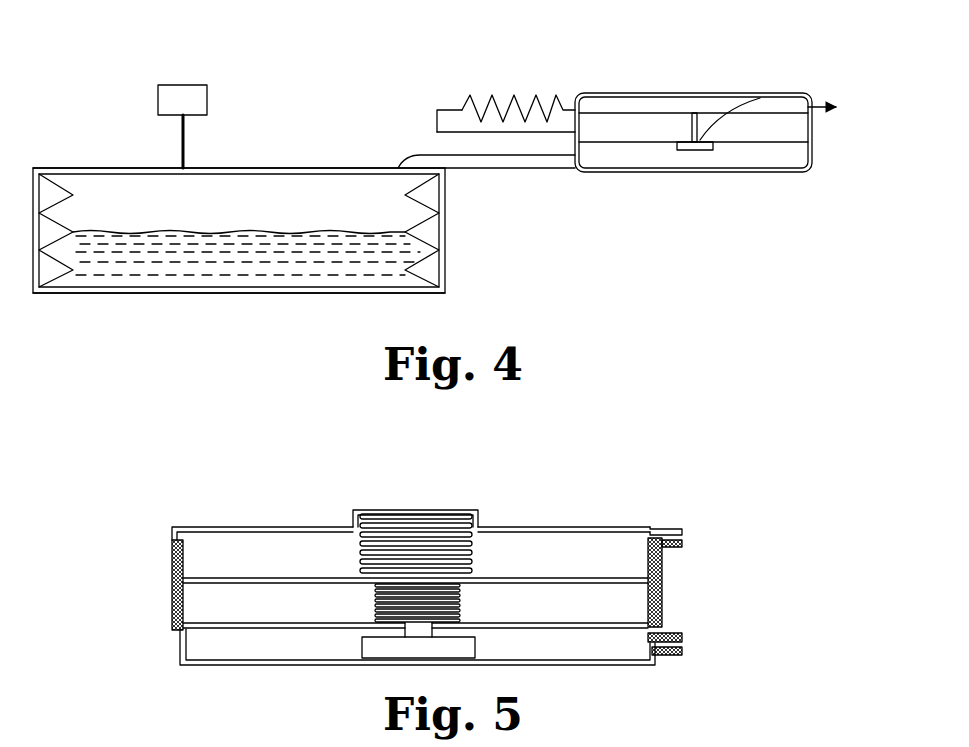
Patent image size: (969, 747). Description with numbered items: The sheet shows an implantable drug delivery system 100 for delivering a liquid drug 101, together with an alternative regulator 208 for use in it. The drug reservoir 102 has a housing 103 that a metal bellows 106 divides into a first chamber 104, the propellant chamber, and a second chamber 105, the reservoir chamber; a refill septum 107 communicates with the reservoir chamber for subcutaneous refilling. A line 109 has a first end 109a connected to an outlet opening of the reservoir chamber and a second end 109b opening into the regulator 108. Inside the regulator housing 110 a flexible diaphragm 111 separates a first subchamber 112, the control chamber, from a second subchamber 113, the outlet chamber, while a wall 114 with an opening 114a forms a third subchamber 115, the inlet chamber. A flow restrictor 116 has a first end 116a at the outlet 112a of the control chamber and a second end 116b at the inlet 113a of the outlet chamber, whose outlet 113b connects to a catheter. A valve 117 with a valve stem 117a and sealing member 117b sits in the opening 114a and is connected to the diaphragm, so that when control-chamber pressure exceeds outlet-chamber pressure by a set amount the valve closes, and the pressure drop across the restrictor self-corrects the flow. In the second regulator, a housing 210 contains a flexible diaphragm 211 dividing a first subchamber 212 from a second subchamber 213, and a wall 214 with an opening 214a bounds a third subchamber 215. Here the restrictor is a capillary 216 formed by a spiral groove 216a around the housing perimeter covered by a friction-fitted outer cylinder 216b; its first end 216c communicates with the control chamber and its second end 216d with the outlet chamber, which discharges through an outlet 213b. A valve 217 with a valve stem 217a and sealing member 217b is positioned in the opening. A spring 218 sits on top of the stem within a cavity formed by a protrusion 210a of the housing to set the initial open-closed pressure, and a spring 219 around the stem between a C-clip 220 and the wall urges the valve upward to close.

In FIG. 4, the drug delivery system 100 is at (372, 93).
In FIG. 4, the liquid drug 101 is at (230, 268).
In FIG. 4, the drug reservoir 102 is at (447, 247).
In FIG. 4, the housing 103 is at (203, 300).
In FIG. 4, the first chamber 104 is at (45, 172).
In FIG. 4, the second chamber 105 is at (222, 216).
In FIG. 4, the metal bellows 106 is at (83, 168).
In FIG. 4, the refill septum 107 is at (183, 85).
In FIG. 4, the regulator 108 is at (712, 97).
In FIG. 4, the line 109 is at (505, 160).
In FIG. 5, the line 109 is at (670, 656).
In FIG. 4, the first end 109a is at (410, 160).
In FIG. 4, the second end 109b is at (571, 160).
In FIG. 4, the housing 110 is at (812, 135).
In FIG. 4, the flexible diaphragm 111 is at (777, 124).
In FIG. 4, the first subchamber 112 is at (655, 125).
In FIG. 4, the outlet 112a is at (582, 132).
In FIG. 4, the second subchamber 113 is at (634, 108).
In FIG. 4, the inlet 113a is at (585, 102).
In FIG. 4, the outlet 113b is at (793, 100).
In FIG. 4, the wall 114 is at (765, 144).
In FIG. 4, the opening 114a is at (703, 135).
In FIG. 4, the third subchamber 115 is at (742, 155).
In FIG. 4, the flow restrictor 116 is at (497, 100).
In FIG. 4, the first end 116a is at (575, 135).
In FIG. 4, the second end 116b is at (558, 108).
In FIG. 4, the valve 117 is at (697, 152).
In FIG. 4, the valve stem 117a is at (688, 130).
In FIG. 4, the sealing member 117b is at (718, 128).
In FIG. 5, the regulator 208 is at (213, 480).
In FIG. 5, the housing 210 is at (180, 648).
In FIG. 5, the protrusion 210a is at (393, 510).
In FIG. 5, the flexible diaphragm 211 is at (202, 577).
In FIG. 5, the first subchamber 212 is at (545, 585).
In FIG. 5, the second subchamber 213 is at (500, 543).
In FIG. 5, the outlet 213b is at (646, 533).
In FIG. 5, the wall 214 is at (584, 622).
In FIG. 5, the opening 214a is at (373, 608).
In FIG. 5, the third subchamber 215 is at (562, 648).
In FIG. 5, the capillary 216 is at (668, 586).
In FIG. 5, the spiral groove 216a is at (172, 592).
In FIG. 5, the outer cylinder 216b is at (668, 615).
In FIG. 5, the first end 216c is at (188, 622).
In FIG. 5, the second end 216d is at (648, 545).
In FIG. 5, the valve 217 is at (482, 645).
In FIG. 5, the valve stem 217a is at (462, 588).
In FIG. 5, the sealing member 217b is at (362, 639).
In FIG. 5, the spring 218 is at (362, 543).
In FIG. 5, the spring 219 is at (373, 593).
In FIG. 5, the C-clip 220 is at (373, 578).